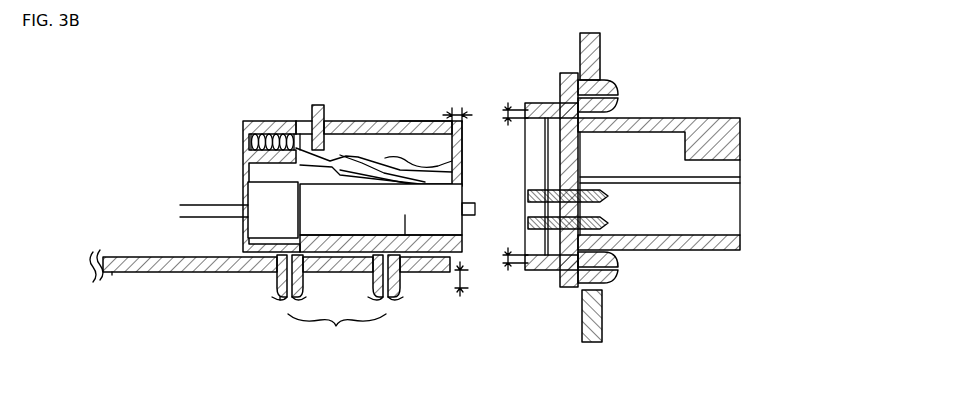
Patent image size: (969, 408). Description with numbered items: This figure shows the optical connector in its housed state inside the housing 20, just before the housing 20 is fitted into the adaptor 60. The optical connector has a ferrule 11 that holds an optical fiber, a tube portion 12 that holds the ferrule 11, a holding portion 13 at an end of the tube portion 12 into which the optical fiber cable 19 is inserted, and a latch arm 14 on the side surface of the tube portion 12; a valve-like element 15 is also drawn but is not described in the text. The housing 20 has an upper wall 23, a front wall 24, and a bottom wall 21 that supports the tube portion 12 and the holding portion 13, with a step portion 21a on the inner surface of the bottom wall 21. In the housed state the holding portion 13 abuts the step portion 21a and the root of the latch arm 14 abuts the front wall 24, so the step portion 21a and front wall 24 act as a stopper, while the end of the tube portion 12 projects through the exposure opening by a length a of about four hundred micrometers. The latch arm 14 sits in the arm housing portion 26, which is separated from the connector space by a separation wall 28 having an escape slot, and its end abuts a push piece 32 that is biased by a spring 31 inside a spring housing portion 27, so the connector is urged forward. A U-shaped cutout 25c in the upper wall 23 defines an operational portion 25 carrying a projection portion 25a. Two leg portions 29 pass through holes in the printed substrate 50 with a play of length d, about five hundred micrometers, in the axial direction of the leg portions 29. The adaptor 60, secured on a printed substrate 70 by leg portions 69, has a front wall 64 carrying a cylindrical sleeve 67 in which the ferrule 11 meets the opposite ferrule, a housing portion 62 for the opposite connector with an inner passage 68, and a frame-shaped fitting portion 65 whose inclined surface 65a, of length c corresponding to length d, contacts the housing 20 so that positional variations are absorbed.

The ferrule 11 is at (476, 210).
The tube portion 12 is at (166, 257).
The holding portion 13 is at (252, 229).
The latch arm 14 is at (350, 157).
The valve seat 15 is at (378, 166).
The optical fiber cable 19 is at (192, 207).
The housing 20 is at (341, 120).
The bottom wall 21 is at (424, 284).
The step portion 21a is at (281, 299).
The upper wall 23 is at (249, 124).
The front wall 24 is at (464, 122).
The operational portion 25 is at (431, 120).
The projection portion 25a is at (318, 106).
The cutout 25c is at (304, 121).
The arm housing portion 26 is at (456, 120).
The spring housing portion 27 is at (300, 158).
The separation wall 28 is at (445, 171).
The leg portions 29 is at (337, 329).
The spring 31 is at (252, 142).
The push piece 32 is at (297, 120).
The printed substrate 50 is at (113, 276).
The adaptor 60 is at (712, 120).
The housing portion 62 is at (714, 246).
The front wall 64 is at (566, 290).
The fitting portion 65 is at (548, 110).
The inclined surface 65a is at (545, 268).
The sleeve 67 is at (626, 230).
The inner passage 68 is at (742, 179).
The leg portions 69 is at (616, 90).
The printed substrate 70 is at (600, 343).
The length a is at (457, 107).
The length c is at (510, 188).
The length d is at (465, 279).